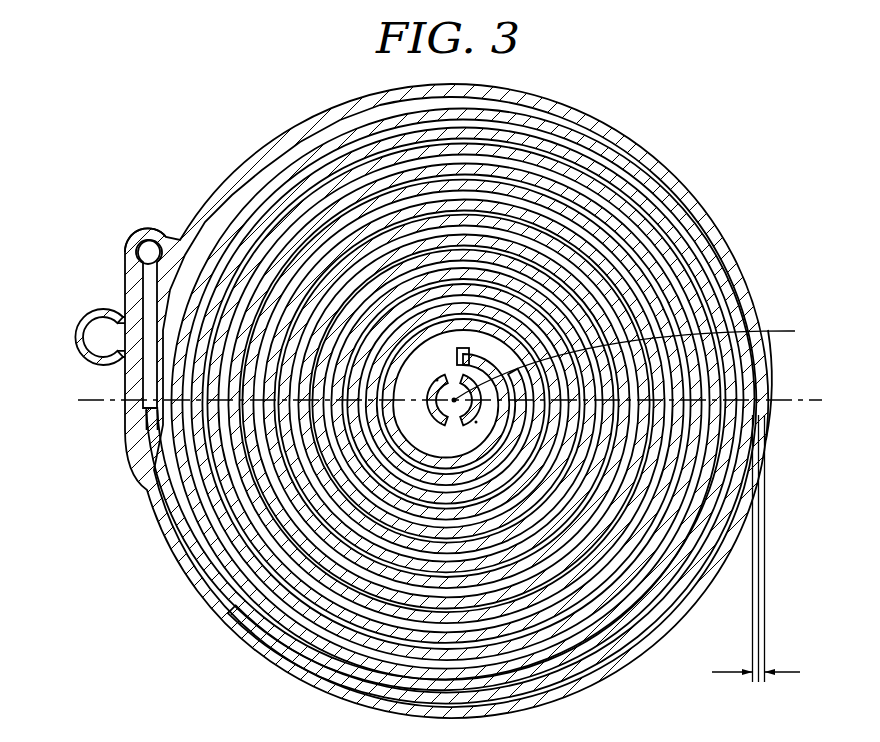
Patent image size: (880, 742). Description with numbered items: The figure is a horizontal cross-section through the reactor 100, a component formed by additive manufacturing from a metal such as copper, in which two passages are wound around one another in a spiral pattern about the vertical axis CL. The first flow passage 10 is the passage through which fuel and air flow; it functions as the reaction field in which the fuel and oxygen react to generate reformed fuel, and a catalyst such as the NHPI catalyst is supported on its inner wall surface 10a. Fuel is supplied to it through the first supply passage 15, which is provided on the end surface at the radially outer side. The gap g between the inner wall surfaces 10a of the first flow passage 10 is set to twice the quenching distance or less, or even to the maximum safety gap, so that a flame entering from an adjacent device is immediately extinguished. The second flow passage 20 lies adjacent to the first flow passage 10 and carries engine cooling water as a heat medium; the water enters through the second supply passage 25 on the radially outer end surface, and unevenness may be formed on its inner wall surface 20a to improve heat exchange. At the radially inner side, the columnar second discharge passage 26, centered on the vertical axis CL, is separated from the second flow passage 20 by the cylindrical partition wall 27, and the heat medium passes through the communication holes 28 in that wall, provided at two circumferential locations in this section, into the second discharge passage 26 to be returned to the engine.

The reactor 100 is at (437, 401).
The first flow passage 10 is at (140, 316).
The inner wall surface of the first flow passage 10a is at (760, 371).
The first supply passage 15 is at (142, 247).
The second flow passage 20 is at (155, 418).
The inner wall surface of the second flow passage 20a is at (153, 452).
The second supply passage 25 is at (97, 340).
The second discharge passage 26 is at (437, 380).
The partition wall 27 is at (476, 422).
The communication holes 28 is at (447, 378).
The vertical axis CL is at (646, 356).
The gap g is at (756, 563).